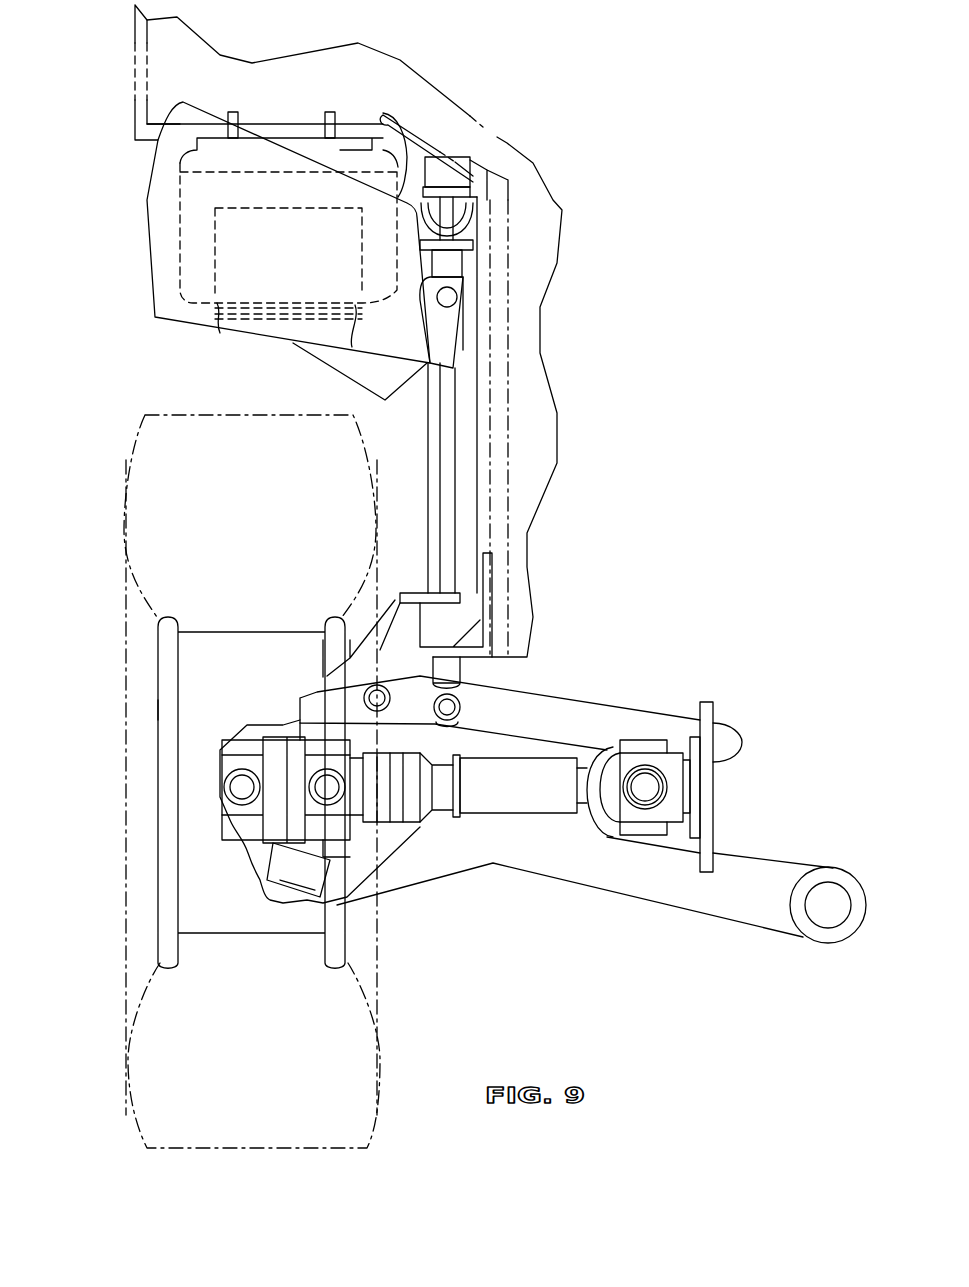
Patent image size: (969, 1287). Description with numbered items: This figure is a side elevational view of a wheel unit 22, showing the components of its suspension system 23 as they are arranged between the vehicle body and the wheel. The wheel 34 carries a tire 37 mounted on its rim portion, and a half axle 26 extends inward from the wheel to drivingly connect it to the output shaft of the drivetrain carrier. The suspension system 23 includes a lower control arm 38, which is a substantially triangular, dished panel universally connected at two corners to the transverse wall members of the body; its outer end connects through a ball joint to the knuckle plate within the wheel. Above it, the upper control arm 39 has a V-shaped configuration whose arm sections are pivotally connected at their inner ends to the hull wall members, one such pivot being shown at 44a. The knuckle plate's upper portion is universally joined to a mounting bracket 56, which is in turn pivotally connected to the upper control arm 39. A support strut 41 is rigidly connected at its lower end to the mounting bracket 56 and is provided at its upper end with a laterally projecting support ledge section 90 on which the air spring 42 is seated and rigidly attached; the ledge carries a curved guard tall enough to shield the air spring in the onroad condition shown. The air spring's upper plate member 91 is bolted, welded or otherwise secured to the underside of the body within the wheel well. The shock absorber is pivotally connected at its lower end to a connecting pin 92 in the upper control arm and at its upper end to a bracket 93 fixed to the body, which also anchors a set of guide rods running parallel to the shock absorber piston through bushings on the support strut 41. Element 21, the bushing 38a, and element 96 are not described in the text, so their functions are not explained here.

The frame bracket 21 is at (135, 95).
The wheel unit 22 is at (118, 692).
The suspension system 23 is at (543, 530).
The half axle 26 is at (520, 800).
The wheel 34 is at (158, 800).
The tire 37 is at (122, 533).
The lower control arm 38 is at (577, 883).
The lower arm bushing 38a is at (823, 890).
The upper control arm 39 is at (600, 710).
The support strut 41 is at (455, 455).
The air spring 42 is at (383, 117).
The pivotal connection 44a is at (727, 738).
The mounting bracket 56 is at (440, 620).
The support ledge section 90 is at (227, 333).
The upper plate member 91 is at (350, 137).
The connecting pin 92 is at (447, 707).
The bracket 93 is at (468, 187).
The shock mounting bracket 96 is at (462, 270).